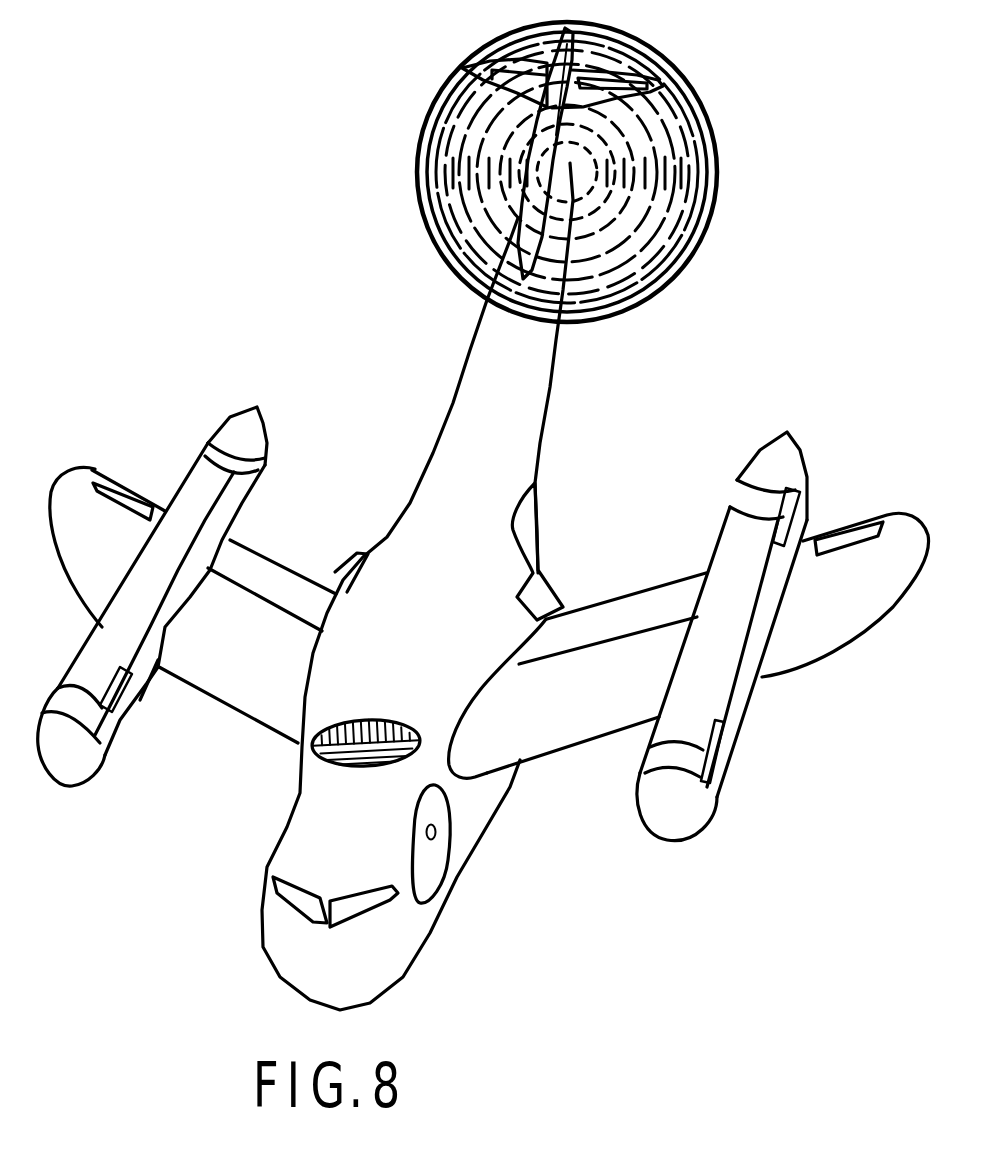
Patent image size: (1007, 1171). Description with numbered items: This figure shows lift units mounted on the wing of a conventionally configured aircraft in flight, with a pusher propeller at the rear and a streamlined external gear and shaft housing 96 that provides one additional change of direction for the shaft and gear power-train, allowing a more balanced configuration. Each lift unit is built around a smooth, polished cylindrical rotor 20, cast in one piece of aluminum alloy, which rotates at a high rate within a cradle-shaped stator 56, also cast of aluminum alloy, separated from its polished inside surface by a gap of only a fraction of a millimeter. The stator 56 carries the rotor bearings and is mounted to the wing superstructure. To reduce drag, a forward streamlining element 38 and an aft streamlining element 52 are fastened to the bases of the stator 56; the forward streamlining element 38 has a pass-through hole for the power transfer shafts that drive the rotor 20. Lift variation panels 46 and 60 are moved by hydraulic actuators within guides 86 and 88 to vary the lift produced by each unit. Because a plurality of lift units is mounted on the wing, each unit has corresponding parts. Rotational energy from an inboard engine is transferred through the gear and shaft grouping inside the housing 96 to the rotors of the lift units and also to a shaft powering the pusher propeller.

The cylindrical rotor 20 is at (187, 497).
The forward streamlining element 38 is at (257, 427).
The lift variation panel 60 is at (747, 493).
The guide 86 is at (807, 507).
The guide 88 is at (717, 753).
The lift variation panel 46 is at (667, 755).
The aft streamlining element 52 is at (683, 820).
The streamlined external gear and shaft housing 96 is at (150, 703).
The stator 56 is at (130, 675).